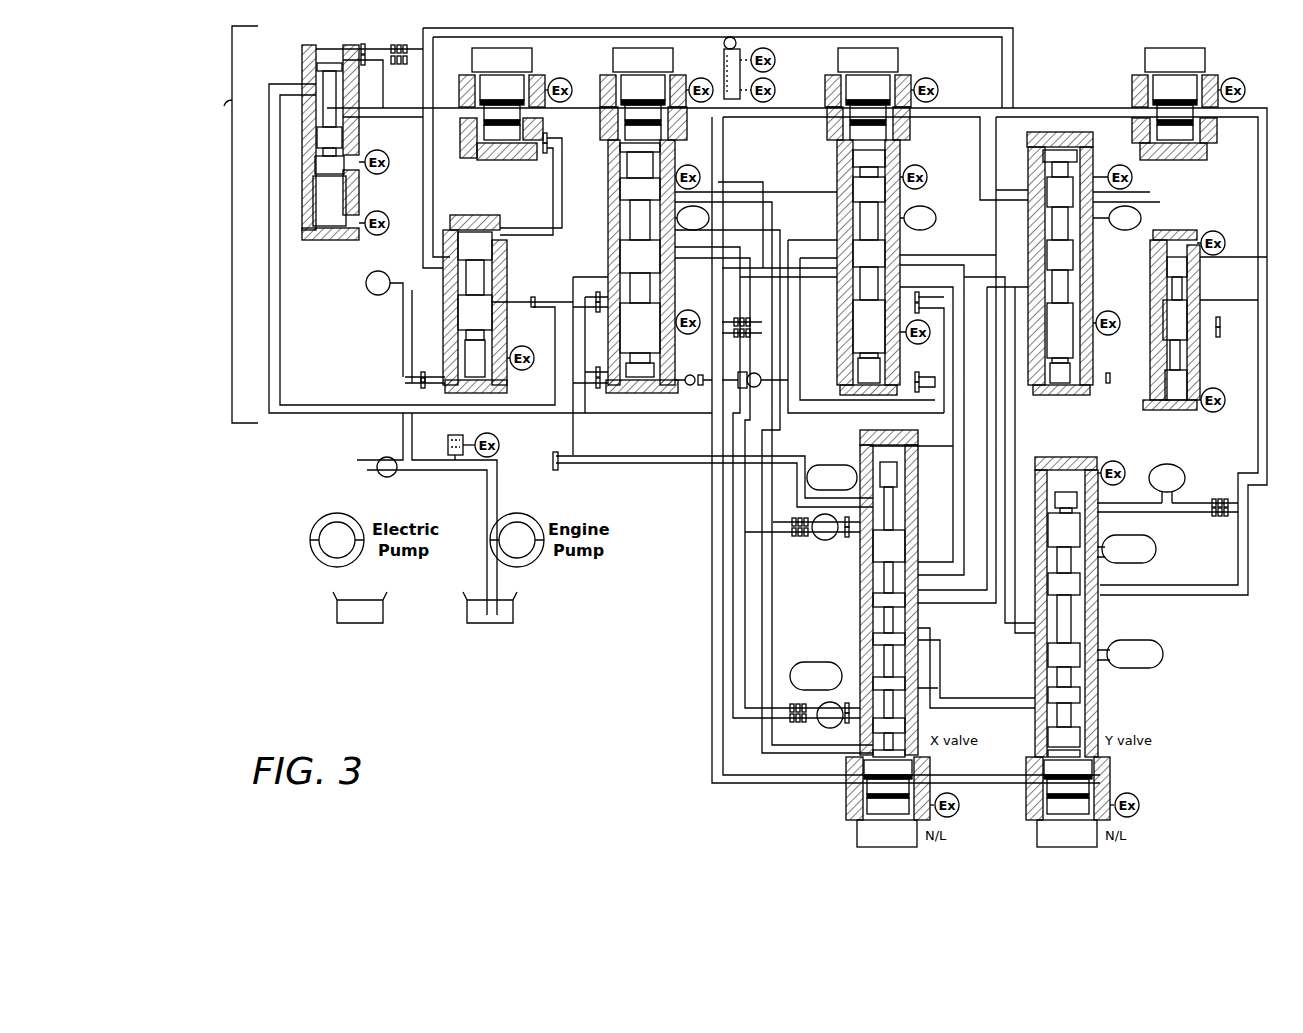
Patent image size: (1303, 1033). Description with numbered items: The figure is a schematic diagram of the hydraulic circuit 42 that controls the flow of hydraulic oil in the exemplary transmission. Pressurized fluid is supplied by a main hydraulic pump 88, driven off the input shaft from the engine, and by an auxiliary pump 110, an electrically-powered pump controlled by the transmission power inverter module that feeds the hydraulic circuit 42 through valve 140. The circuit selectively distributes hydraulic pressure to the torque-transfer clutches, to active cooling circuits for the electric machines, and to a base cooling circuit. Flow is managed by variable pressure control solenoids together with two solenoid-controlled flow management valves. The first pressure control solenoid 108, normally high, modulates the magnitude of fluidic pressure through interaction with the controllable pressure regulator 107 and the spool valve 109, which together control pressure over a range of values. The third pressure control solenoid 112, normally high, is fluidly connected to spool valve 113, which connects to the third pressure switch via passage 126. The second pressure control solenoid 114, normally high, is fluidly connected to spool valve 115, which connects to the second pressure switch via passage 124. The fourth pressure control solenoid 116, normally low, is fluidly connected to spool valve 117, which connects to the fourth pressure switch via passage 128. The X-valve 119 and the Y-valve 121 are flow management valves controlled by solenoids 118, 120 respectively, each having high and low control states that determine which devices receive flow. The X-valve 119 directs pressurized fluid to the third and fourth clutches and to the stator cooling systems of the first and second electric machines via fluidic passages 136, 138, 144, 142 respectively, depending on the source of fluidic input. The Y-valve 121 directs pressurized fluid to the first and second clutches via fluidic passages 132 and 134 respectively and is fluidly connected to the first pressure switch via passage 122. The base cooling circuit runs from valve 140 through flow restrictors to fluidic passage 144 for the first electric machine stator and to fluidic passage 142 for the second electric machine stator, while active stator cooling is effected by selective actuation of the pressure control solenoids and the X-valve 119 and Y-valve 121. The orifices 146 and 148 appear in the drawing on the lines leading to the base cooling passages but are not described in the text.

The hydraulic circuit 42 is at (224, 100).
The main hydraulic pump 88 is at (524, 565).
The controllable pressure regulator 107 is at (327, 217).
The pressure control solenoid PCS1 108 is at (490, 48).
The spool valve 109 is at (487, 235).
The auxiliary pump 110 is at (328, 565).
The pressure control solenoid PCS3 112 is at (1148, 49).
The spool valve 113 is at (1065, 255).
The pressure control solenoid PCS2 114 is at (850, 48).
The spool valve 115 is at (853, 162).
The pressure control solenoid PCS4 116 is at (630, 48).
The spool valve 117 is at (645, 190).
The solenoid 118 is at (873, 838).
The X-valve 119 is at (885, 600).
The solenoid 120 is at (1049, 838).
The Y-valve 121 is at (1078, 703).
The passage 122 is at (1168, 466).
The passage 124 is at (925, 206).
The passage 126 is at (1127, 206).
The passage 128 is at (702, 208).
The fluidic passage 132 is at (1195, 664).
The fluidic passage 134 is at (1156, 550).
The fluidic passage 136 is at (820, 662).
The fluidic passage 138 is at (832, 465).
The valve 140 is at (380, 461).
The fluidic passage 142 is at (830, 728).
The fluidic passage 144 is at (822, 538).
The orifice 146 is at (800, 540).
The orifice 148 is at (797, 730).